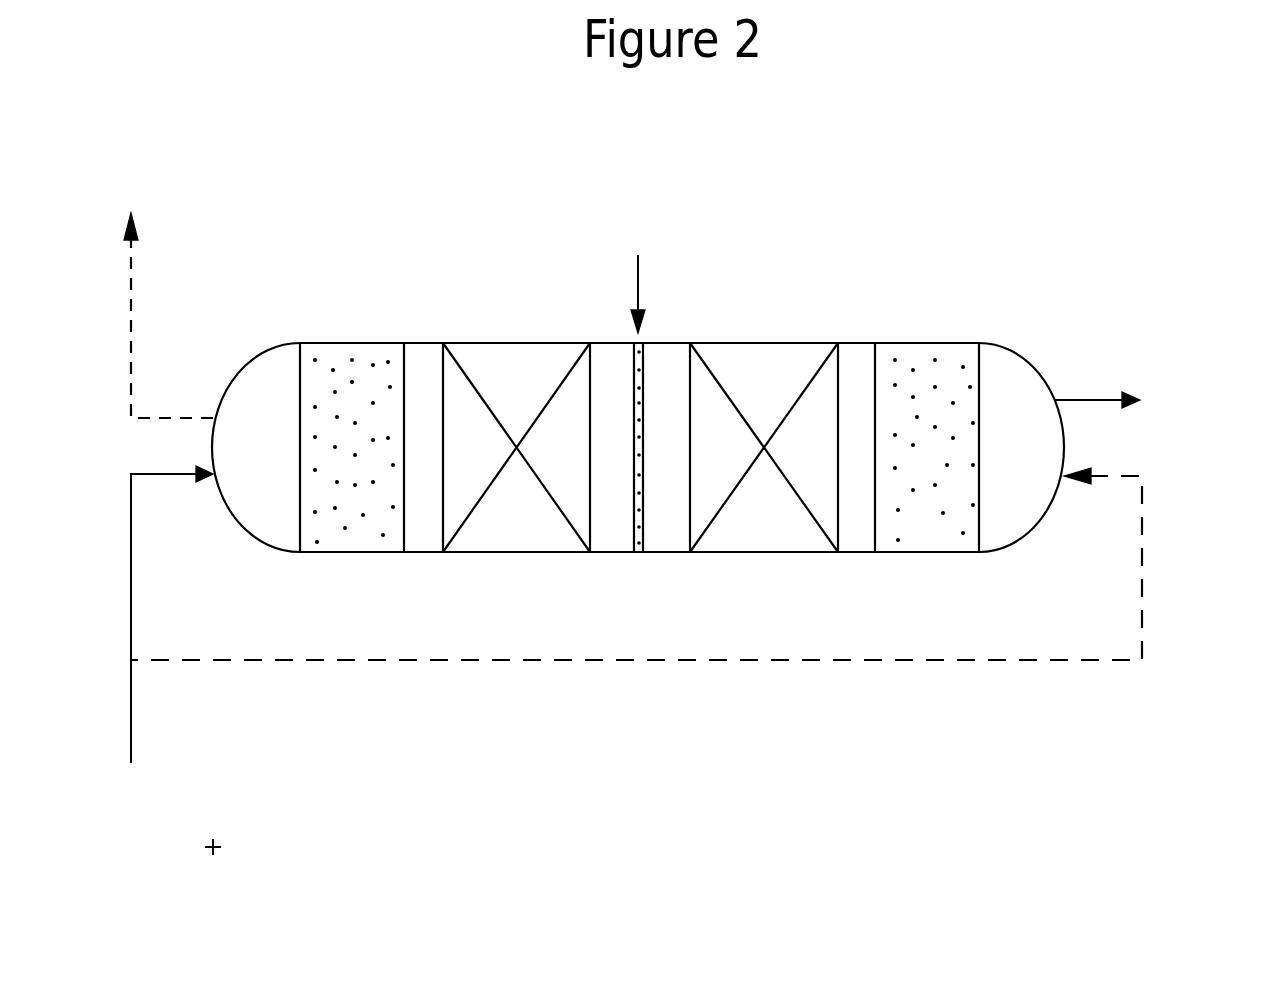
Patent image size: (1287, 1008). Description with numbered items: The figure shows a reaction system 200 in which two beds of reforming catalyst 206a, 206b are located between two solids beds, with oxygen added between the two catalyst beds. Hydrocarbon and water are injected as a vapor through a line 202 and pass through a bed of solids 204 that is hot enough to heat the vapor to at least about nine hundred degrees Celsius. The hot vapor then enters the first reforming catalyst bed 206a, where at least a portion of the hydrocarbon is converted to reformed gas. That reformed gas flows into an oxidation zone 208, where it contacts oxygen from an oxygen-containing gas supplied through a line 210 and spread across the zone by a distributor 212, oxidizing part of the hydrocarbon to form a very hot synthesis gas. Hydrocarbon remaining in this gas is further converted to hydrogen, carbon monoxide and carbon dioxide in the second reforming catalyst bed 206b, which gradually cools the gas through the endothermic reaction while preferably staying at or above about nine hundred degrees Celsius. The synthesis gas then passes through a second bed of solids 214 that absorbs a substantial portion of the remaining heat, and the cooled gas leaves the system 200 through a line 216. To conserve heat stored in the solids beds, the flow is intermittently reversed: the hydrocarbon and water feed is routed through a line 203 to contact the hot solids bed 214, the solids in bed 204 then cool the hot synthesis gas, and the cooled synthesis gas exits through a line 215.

The reaction system 200 is at (972, 270).
The line 202 is at (130, 546).
The line 203 is at (765, 665).
The bed of solids 204 is at (346, 361).
The bed containing reforming catalyst 206a is at (512, 363).
The second bed of reforming catalyst 206b is at (763, 363).
The oxidation zone 208 is at (660, 538).
The line 210 is at (638, 283).
The distributor 212 is at (630, 518).
The second bed of solids 214 is at (920, 538).
The line 215 is at (130, 325).
The line 216 is at (1085, 400).